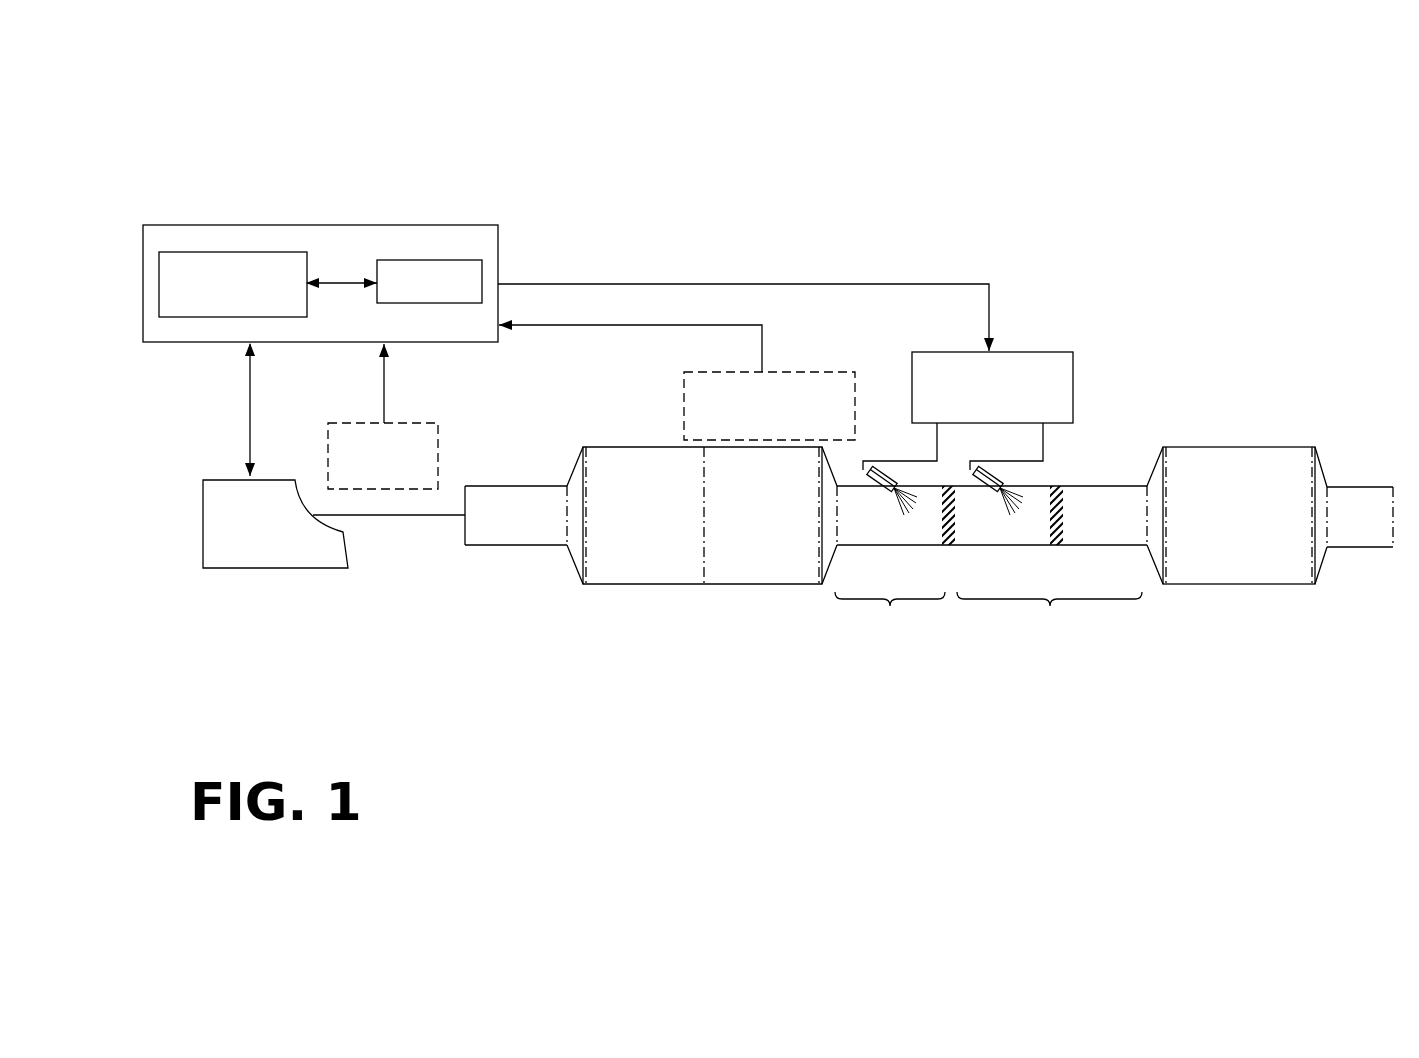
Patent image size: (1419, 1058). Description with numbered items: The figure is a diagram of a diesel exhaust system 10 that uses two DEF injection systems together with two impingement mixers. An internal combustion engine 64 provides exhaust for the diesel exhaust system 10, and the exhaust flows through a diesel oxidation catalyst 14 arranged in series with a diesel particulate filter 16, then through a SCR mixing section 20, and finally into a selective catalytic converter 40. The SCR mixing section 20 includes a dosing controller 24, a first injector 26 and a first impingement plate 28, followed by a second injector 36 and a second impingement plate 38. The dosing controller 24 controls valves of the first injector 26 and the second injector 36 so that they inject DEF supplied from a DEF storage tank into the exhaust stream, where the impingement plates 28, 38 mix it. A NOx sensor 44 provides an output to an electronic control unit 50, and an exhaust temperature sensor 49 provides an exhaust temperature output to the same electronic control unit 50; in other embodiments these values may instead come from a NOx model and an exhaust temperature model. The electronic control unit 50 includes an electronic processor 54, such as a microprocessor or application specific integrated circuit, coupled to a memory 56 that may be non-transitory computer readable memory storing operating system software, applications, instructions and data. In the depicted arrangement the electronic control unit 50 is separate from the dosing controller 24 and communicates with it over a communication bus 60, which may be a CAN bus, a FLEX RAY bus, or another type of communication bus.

The diesel exhaust system 10 is at (673, 700).
The diesel oxidation catalyst 14 is at (627, 584).
The diesel particulate filter 16 is at (753, 584).
The SCR mixing section 20 is at (971, 665).
The dosing controller 24 is at (1073, 378).
The first injector 26 is at (866, 473).
The first impingement plate 28 is at (948, 520).
The second injector 36 is at (1003, 474).
The second impingement plate 38 is at (1060, 518).
The selective catalytic converter 40 is at (1228, 447).
The NOx sensor 44 is at (386, 388).
The exhaust temperature sensor 49 is at (684, 388).
The electronic control unit 50 is at (320, 234).
The electronic processor 54 is at (220, 252).
The memory 56 is at (418, 260).
The communication bus 60 is at (657, 284).
The internal combustion engine 64 is at (285, 568).